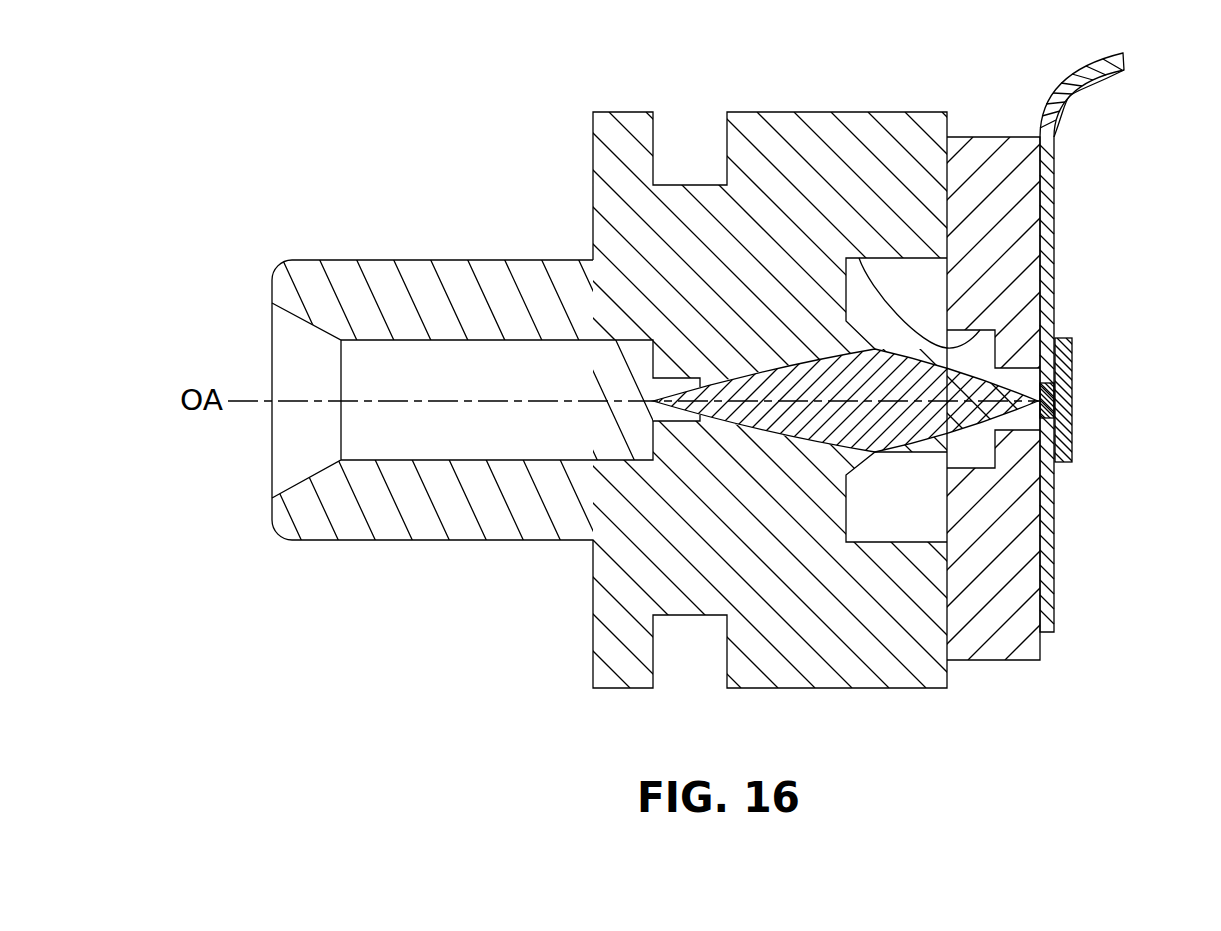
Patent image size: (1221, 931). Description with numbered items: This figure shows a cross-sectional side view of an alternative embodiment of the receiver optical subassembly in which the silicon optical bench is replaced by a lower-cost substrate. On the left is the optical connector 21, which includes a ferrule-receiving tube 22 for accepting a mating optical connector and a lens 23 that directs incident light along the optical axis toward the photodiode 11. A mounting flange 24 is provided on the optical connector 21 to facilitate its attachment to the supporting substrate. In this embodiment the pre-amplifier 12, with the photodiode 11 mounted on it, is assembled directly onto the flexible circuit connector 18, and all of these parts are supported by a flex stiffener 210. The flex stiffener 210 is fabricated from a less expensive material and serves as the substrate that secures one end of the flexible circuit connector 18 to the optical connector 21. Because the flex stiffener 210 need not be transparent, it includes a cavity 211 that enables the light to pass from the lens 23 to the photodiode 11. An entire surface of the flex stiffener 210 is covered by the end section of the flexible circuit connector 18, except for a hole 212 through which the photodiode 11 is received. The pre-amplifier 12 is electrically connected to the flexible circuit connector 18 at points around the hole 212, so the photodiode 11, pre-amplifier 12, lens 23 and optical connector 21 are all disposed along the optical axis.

The photodiode 11 is at (1013, 437).
The pre-amplifier 12 is at (1074, 353).
The flexible circuit connector 18 is at (1073, 97).
The optical connector 21 is at (572, 688).
The ferrule-receiving tube 22 is at (385, 275).
The lens 23 is at (883, 422).
The mounting flange 24 is at (762, 132).
The flex stiffener 210 is at (997, 648).
The cavity 211 is at (859, 258).
The hole 212 is at (1074, 417).